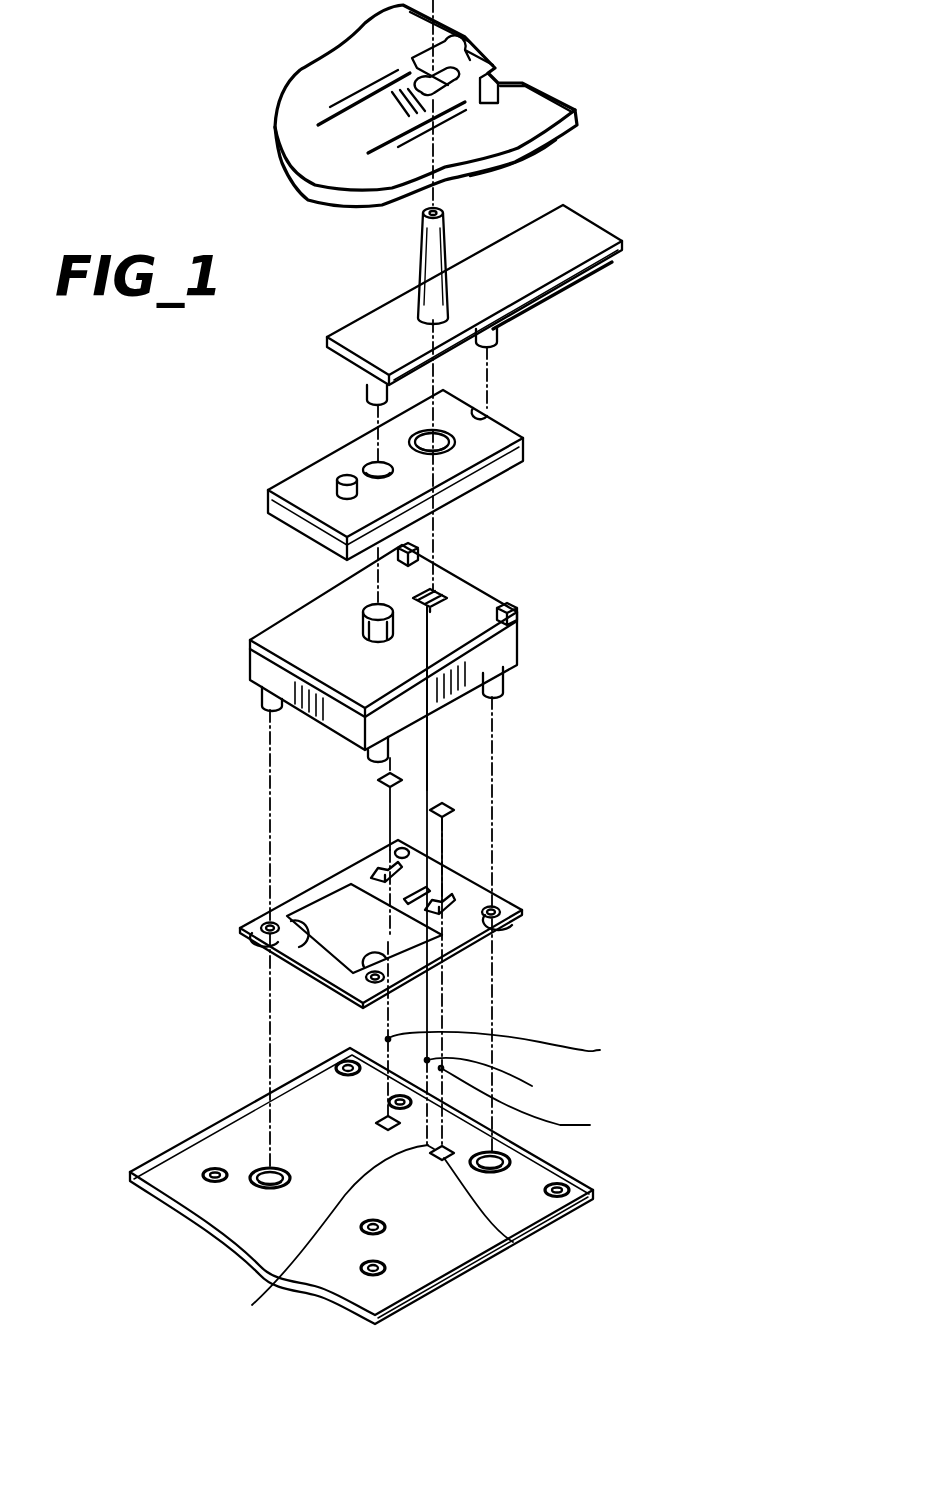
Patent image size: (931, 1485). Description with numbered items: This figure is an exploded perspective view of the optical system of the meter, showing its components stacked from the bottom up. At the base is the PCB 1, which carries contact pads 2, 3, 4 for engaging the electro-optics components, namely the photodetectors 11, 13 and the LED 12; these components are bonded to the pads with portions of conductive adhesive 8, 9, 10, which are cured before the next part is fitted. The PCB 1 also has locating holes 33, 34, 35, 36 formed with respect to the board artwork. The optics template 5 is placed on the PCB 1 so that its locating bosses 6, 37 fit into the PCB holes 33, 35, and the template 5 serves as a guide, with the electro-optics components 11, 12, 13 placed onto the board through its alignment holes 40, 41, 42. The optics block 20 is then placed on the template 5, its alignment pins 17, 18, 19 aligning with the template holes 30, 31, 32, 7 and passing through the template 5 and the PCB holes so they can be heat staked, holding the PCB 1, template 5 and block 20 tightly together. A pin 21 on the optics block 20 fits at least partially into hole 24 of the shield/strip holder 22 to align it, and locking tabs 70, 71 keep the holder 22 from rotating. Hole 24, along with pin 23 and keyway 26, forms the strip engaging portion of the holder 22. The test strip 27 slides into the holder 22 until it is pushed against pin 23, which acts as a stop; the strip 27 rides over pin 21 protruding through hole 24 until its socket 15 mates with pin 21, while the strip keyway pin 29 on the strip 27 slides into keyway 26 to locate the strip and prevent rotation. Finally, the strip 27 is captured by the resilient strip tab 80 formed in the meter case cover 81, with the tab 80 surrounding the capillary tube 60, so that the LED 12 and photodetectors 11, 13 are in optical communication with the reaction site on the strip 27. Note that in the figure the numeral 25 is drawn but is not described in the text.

The PCB 1 is at (321, 1186).
The contact pad 2 is at (527, 1209).
The contact pad 3 is at (328, 1235).
The contact pad 4 is at (267, 1121).
The optics template 5 is at (396, 939).
The locating boss 6 is at (551, 958).
The hole 7 is at (549, 916).
The conductive adhesive portion 8 is at (504, 1049).
The conductive adhesive portion 9 is at (489, 1080).
The conductive adhesive portion 10 is at (532, 1103).
The photodetector 11 is at (495, 816).
The LED 12 is at (493, 706).
The photodetector 13 is at (301, 759).
The socket 15 is at (318, 374).
The optics block alignment pin 17 is at (557, 662).
The optics block alignment pin 18 is at (206, 702).
The optics block alignment pin 19 is at (498, 729).
The optics block 20 is at (327, 647).
The pin 21 is at (299, 614).
The shield/strip holder 22 is at (330, 486).
The pin 23 is at (247, 493).
The hole 24 is at (265, 444).
The hole 25 is at (517, 473).
The keyway 26 is at (549, 427).
The test strip 27 is at (512, 295).
The strip keyway pin 29 is at (551, 353).
The hole 30 is at (246, 993).
The hole 31 is at (207, 915).
The hole 32 is at (307, 828).
The locating hole 33 is at (579, 1178).
The locating hole 34 is at (308, 1090).
The locating hole 35 is at (207, 1219).
The locating hole 36 is at (445, 1295).
The locating boss 37 is at (259, 979).
The alignment hole 40 is at (268, 855).
The alignment hole 41 is at (295, 992).
The alignment hole 42 is at (513, 875).
The capillary tube 60 is at (372, 266).
The locking tab 70 is at (476, 546).
The locking tab 71 is at (565, 591).
The strip tab 80 is at (393, 106).
The meter case cover 81 is at (555, 143).